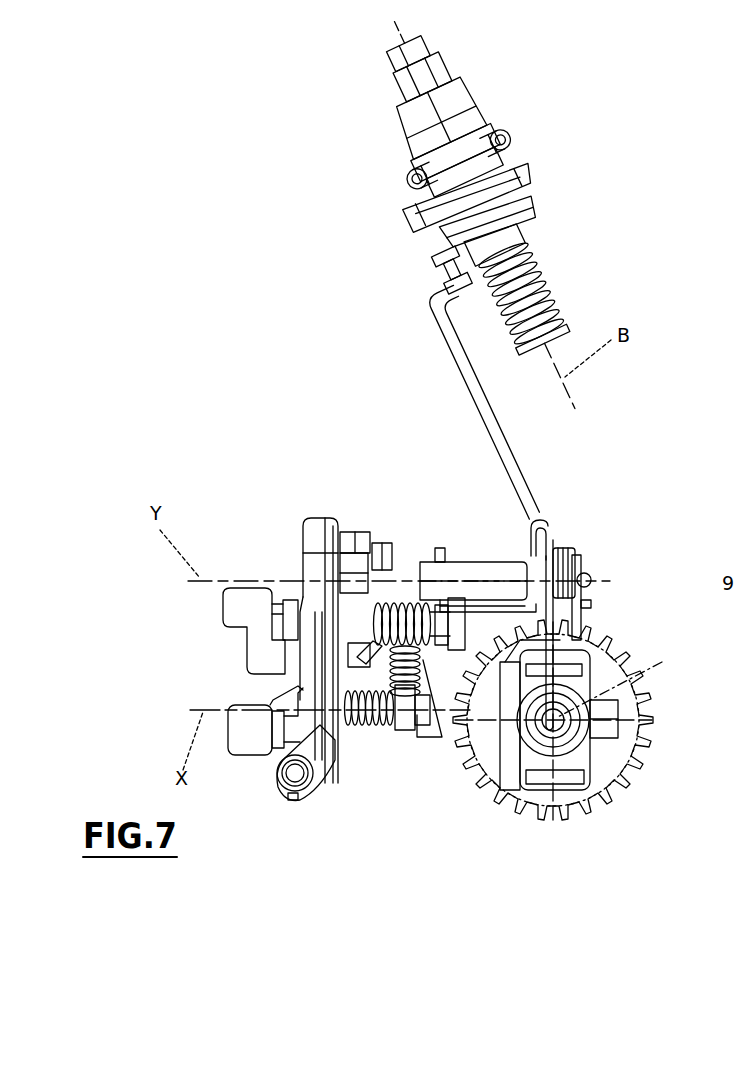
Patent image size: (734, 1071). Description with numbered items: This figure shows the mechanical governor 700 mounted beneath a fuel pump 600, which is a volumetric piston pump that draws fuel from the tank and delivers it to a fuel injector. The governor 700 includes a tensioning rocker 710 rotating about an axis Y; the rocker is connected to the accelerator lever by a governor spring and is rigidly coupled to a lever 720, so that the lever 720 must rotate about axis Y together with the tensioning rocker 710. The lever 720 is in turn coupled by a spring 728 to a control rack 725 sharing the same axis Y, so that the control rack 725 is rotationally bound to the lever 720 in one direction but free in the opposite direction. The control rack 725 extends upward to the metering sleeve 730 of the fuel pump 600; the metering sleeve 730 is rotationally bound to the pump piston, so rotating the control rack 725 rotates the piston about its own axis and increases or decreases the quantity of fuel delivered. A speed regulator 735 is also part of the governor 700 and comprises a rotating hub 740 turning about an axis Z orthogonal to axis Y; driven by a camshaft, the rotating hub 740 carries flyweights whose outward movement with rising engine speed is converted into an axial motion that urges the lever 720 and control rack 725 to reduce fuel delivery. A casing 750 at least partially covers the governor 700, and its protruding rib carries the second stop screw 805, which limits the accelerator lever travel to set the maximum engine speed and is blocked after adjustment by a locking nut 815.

The fuel pump 600 is at (544, 92).
The governor 700 is at (288, 447).
The tensioning rocker 710 is at (303, 657).
The lever 720 is at (582, 628).
The control rack 725 is at (537, 468).
The spring 728 is at (562, 548).
The metering sleeve 730 is at (432, 258).
The speed regulator 735 is at (630, 807).
The rotating hub 740 is at (507, 780).
The casing 750 is at (318, 562).
The second stop screw 805 is at (283, 790).
The locking nut 815 is at (302, 795).